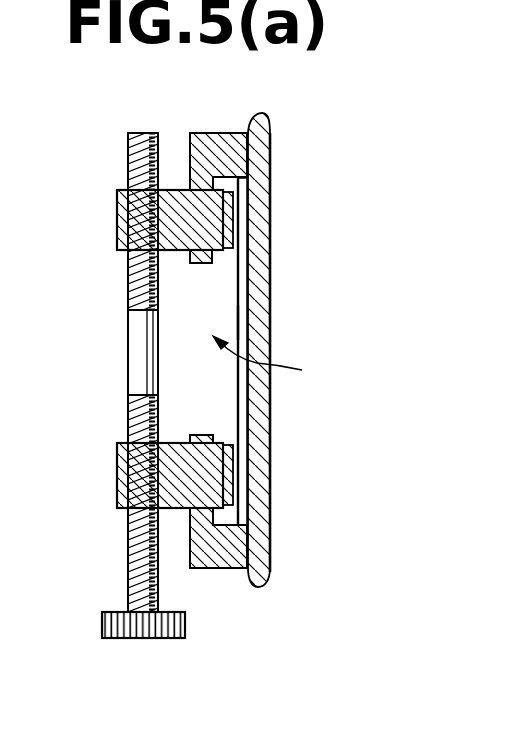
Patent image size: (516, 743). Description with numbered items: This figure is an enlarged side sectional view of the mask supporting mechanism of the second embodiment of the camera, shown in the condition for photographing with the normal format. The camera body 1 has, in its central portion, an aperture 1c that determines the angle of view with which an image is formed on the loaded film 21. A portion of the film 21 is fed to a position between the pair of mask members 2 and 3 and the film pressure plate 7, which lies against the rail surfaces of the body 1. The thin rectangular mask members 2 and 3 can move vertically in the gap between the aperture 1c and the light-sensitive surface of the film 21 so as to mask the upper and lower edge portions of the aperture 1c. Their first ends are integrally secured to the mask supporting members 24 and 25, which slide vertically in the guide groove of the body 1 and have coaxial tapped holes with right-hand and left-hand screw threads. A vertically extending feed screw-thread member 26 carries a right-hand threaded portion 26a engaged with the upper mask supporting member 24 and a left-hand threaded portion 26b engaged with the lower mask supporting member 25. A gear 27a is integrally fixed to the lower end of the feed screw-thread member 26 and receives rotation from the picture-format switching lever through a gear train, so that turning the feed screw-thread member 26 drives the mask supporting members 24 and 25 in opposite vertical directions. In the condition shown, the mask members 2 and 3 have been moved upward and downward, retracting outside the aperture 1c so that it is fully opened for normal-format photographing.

The body 1 is at (223, 147).
The aperture 1c is at (275, 360).
The mask member 2 is at (224, 257).
The mask member 3 is at (230, 436).
The film pressure plate 7 is at (262, 190).
The film 21 is at (241, 318).
The mask supporting member 24 is at (133, 227).
The mask supporting member 25 is at (137, 483).
The feed screw-thread member 26 is at (140, 380).
The right-hand threaded portion 26a is at (130, 163).
The left-hand threaded portion 26b is at (135, 563).
The gear 27a is at (115, 638).